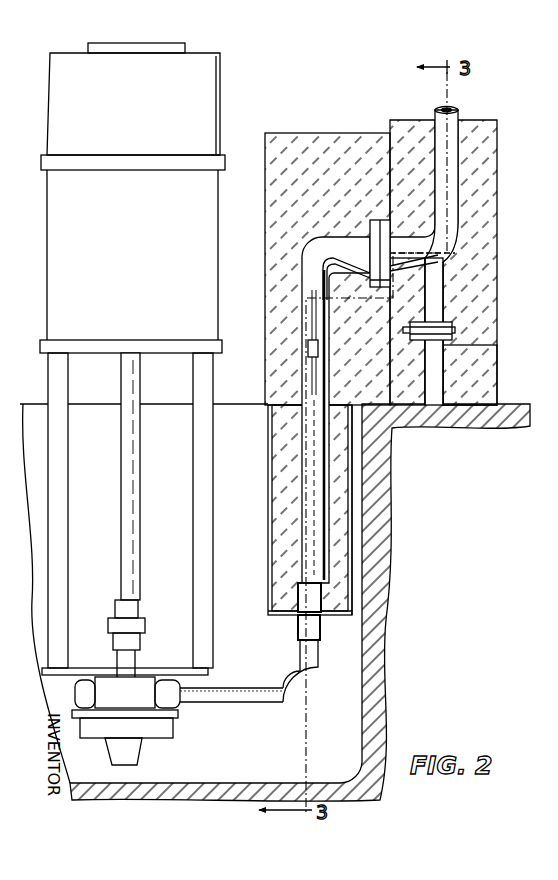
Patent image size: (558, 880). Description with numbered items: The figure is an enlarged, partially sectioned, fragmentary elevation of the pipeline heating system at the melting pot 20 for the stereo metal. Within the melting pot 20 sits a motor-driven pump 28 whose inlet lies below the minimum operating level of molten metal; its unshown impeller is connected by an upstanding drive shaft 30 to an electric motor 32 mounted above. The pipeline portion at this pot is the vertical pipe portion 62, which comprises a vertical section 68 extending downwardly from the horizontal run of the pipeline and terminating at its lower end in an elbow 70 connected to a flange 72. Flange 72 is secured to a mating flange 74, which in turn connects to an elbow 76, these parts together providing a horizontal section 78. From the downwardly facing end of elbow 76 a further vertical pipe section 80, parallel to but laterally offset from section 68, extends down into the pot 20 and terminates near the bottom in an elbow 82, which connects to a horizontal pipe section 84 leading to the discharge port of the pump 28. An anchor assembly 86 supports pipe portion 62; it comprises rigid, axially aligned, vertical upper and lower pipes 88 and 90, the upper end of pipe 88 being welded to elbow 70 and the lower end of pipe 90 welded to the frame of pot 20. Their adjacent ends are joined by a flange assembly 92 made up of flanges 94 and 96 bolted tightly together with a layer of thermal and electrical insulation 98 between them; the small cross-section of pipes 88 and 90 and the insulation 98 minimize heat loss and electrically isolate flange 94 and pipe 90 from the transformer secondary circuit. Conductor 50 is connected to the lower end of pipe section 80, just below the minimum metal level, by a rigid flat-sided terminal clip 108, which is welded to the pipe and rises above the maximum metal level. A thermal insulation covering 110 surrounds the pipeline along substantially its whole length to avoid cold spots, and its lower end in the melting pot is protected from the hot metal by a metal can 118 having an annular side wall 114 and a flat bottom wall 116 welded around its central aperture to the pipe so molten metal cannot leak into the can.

The melting pot 20 is at (383, 676).
The motor-driven pump 28 is at (163, 729).
The drive shaft 30 is at (140, 532).
The electric motor 32 is at (146, 257).
The conductor 50 is at (308, 343).
The vertical pipe portion 62 is at (462, 111).
The vertical section 68 is at (462, 155).
The elbow 70 is at (458, 236).
The flange 72 is at (394, 223).
The mating flange 74 is at (372, 224).
The elbow 76 is at (300, 245).
The horizontal section 78 is at (402, 272).
The vertical pipe section 80 is at (302, 310).
The elbow 82 is at (293, 683).
The horizontal pipe section 84 is at (233, 705).
The anchor assembly 86 is at (448, 268).
The upper pipe 88 is at (460, 297).
The lower pipe 90 is at (445, 388).
The flange assembly 92 is at (416, 347).
The flange 94 is at (455, 340).
The flange 96 is at (455, 326).
The thermal and electrical insulation 98 is at (460, 332).
The terminal clip 108 is at (326, 368).
The thermal insulation covering 110 is at (270, 513).
The annular side wall 114 is at (272, 575).
The bottom wall 116 is at (333, 622).
The metal can 118 is at (355, 540).